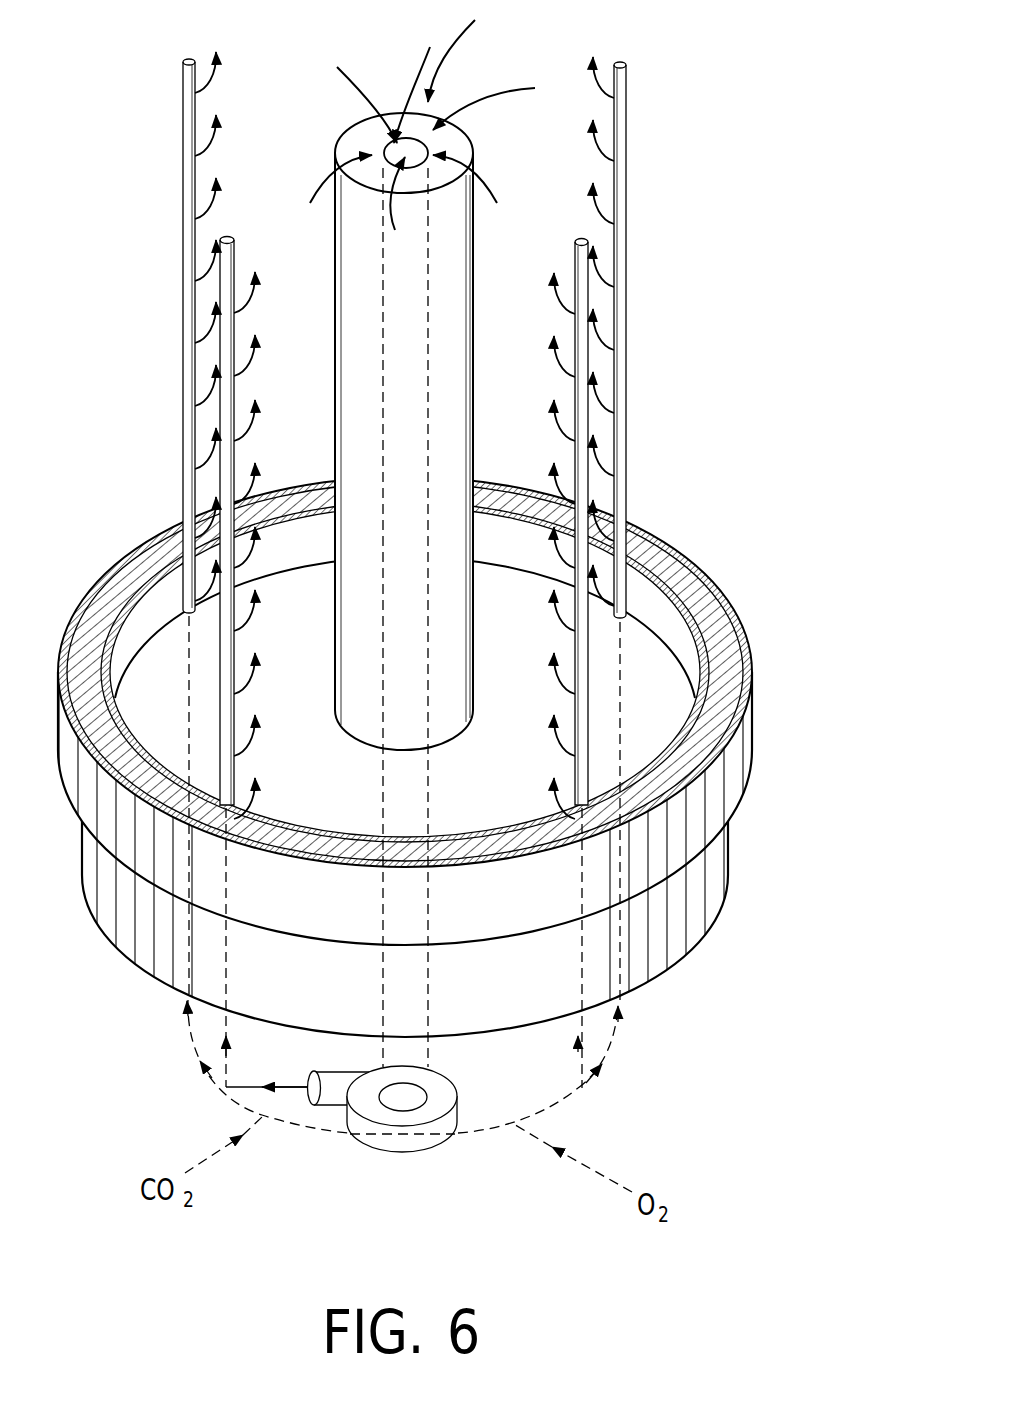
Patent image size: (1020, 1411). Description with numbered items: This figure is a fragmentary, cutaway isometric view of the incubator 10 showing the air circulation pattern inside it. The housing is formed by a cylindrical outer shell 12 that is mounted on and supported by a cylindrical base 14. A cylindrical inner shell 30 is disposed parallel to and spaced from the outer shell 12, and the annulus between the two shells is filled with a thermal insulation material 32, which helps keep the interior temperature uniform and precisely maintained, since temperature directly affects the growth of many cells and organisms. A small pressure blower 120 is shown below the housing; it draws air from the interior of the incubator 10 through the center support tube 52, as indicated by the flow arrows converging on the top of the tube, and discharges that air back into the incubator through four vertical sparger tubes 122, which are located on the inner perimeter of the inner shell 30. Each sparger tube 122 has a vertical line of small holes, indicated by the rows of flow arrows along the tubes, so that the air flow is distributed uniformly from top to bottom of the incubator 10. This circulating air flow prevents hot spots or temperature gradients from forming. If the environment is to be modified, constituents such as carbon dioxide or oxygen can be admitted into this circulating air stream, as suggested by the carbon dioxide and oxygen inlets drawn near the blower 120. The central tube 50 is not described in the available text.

The incubator 10 is at (748, 134).
The cylindrical outer shell 12 is at (740, 753).
The cylindrical base 14 is at (700, 893).
The cylindrical inner shell 30 is at (446, 672).
The thermal insulation material 32 is at (733, 663).
The central tube 50 is at (462, 250).
The center support tube 52 is at (415, 143).
The pressure blower 120 is at (390, 1134).
The vertical sparger tubes 122 is at (183, 312).